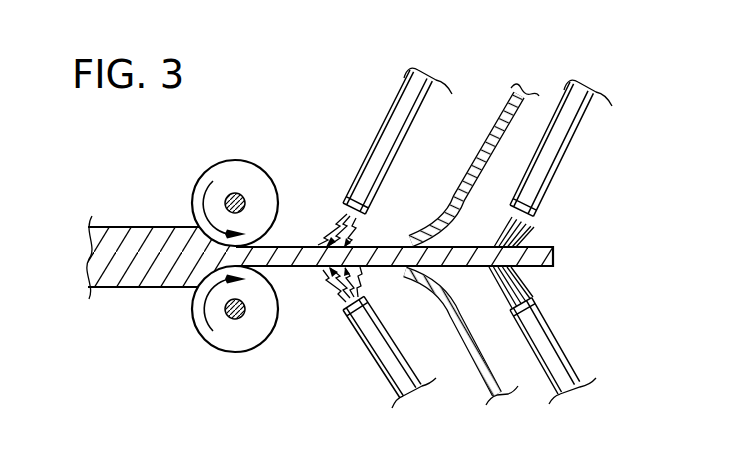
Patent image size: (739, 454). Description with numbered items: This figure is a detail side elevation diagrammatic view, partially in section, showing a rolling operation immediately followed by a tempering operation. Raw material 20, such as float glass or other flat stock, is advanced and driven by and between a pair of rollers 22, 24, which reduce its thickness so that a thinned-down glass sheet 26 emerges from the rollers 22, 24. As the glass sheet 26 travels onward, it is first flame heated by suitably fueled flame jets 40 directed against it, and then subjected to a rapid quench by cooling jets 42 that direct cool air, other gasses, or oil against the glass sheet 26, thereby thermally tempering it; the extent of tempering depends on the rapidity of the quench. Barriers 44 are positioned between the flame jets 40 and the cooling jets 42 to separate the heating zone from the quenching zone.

The raw material 20 is at (133, 227).
The roller 22 is at (249, 170).
The roller 24 is at (256, 333).
The glass sheet 26 is at (555, 259).
The flame jets 40 is at (420, 84).
The cooling jets 42 is at (574, 142).
The barriers 44 is at (510, 104).